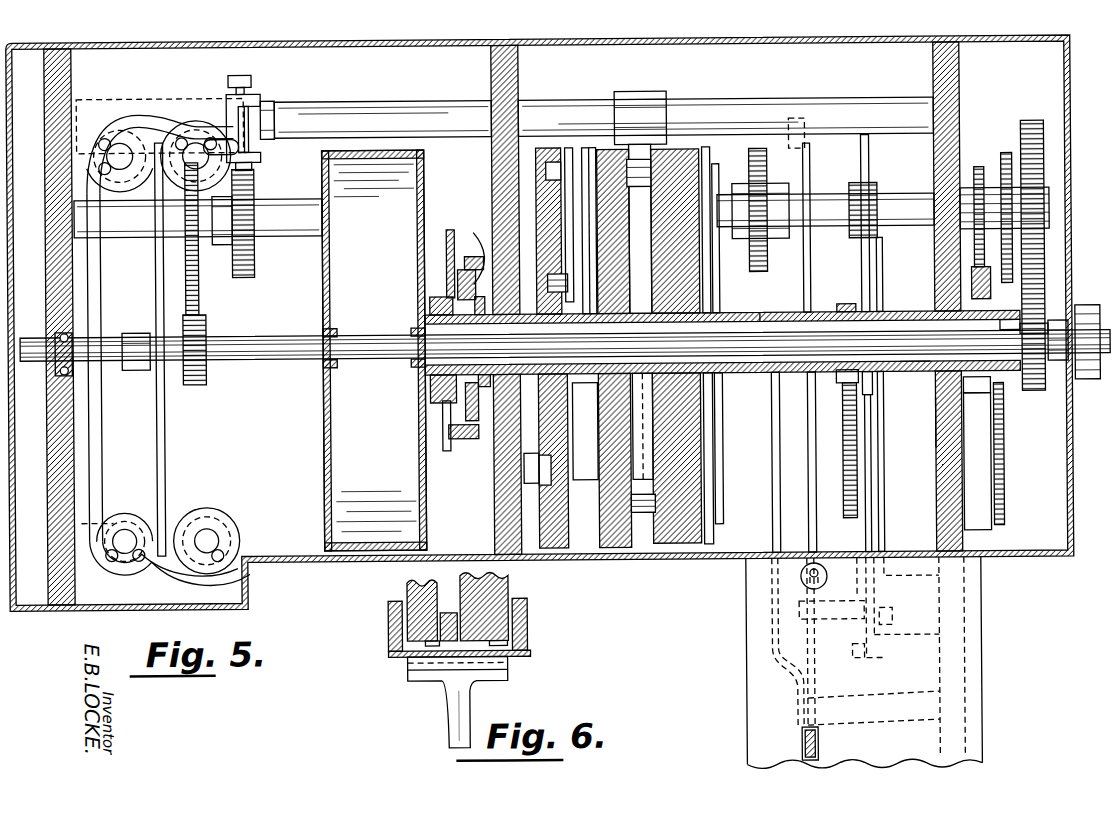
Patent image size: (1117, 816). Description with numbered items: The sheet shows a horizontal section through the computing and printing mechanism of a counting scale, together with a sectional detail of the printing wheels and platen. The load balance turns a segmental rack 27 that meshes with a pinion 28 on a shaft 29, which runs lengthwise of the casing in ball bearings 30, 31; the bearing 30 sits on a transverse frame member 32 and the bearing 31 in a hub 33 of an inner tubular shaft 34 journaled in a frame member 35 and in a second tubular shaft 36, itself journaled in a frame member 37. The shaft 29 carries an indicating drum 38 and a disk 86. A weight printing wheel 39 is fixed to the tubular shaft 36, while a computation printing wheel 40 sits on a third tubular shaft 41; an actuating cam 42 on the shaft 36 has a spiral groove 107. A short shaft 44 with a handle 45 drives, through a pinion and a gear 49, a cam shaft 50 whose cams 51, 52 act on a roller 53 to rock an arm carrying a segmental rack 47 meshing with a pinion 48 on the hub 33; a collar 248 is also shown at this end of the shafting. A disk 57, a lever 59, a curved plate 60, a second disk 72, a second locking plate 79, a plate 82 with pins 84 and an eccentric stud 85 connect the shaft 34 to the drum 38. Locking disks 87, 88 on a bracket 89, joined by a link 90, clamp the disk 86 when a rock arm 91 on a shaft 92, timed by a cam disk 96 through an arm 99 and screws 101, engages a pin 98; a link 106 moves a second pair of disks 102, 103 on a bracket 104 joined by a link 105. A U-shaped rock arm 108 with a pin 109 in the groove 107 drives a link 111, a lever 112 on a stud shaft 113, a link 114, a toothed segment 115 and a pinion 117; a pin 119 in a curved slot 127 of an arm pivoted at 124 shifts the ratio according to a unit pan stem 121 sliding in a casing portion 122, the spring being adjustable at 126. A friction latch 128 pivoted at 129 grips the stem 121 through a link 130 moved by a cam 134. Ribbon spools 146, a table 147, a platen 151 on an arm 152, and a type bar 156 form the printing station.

In FIG. 5, the segmental rack 27 is at (200, 301).
In FIG. 5, the pinion 28 is at (208, 331).
In FIG. 5, the shaft 29 is at (273, 358).
In FIG. 5, the bearing 30 is at (55, 341).
In FIG. 5, the bearing 31 is at (1004, 380).
In FIG. 5, the transverse frame member 32 is at (50, 438).
In FIG. 5, the sleeve or hub 33 is at (978, 381).
In FIG. 5, the tubular shaft 34 is at (908, 374).
In FIG. 5, the frame member 35 is at (937, 426).
In FIG. 5, the second tubular shaft 36 is at (507, 380).
In FIG. 5, the frame member 37 is at (496, 487).
In FIG. 5, the indicating drum 38 is at (322, 444).
In FIG. 5, the weight printing wheel 39 is at (614, 348).
In FIG. 6, the weight printing wheel 39 is at (410, 593).
In FIG. 5, the computation printing wheel 40 is at (676, 346).
In FIG. 6, the computation printing wheel 40 is at (505, 591).
In FIG. 5, the third tubular shaft 41 is at (753, 318).
In FIG. 5, the actuating device 42 is at (548, 231).
In FIG. 5, the short shaft 44 is at (1058, 366).
In FIG. 5, the operating handle 45 is at (1092, 383).
In FIG. 5, the segmental toothed rack 47 is at (1004, 496).
In FIG. 5, the pinion 48 is at (993, 404).
In FIG. 5, the gear 49 is at (1032, 124).
In FIG. 5, the cam shaft 50 is at (278, 232).
In FIG. 5, the cam 51 is at (980, 170).
In FIG. 5, the cam 52 is at (1008, 156).
In FIG. 5, the roller 53 is at (972, 284).
In FIG. 5, the disk 57 is at (432, 381).
In FIG. 5, the lever 59 is at (442, 416).
In FIG. 5, the curved plate 60 is at (462, 420).
In FIG. 5, the second disk 72 is at (430, 310).
In FIG. 5, the second locking plate 79 is at (447, 239).
In FIG. 5, the plate 82 is at (485, 236).
In FIG. 5, the pins 84 is at (458, 276).
In FIG. 5, the eccentric stud 85 is at (465, 261).
In FIG. 5, the disk 86 is at (165, 441).
In FIG. 5, the locking disk 87 is at (198, 112).
In FIG. 5, the locking disk 88 is at (102, 100).
In FIG. 5, the bracket 89 is at (118, 97).
In FIG. 5, the link 90 is at (152, 114).
In FIG. 5, the rock arm 91 is at (278, 106).
In FIG. 5, the shaft 92 is at (361, 106).
In FIG. 5, the cam disk 96 is at (253, 276).
In FIG. 5, the pin 98 is at (211, 130).
In FIG. 5, the arm 99 is at (254, 163).
In FIG. 5, the screws 101 is at (254, 79).
In FIG. 5, the eccentric disk 102 is at (232, 546).
In FIG. 5, the eccentric disk 103 is at (123, 518).
In FIG. 5, the bracket 104 is at (114, 560).
In FIG. 5, the link 105 is at (157, 566).
In FIG. 5, the link 106 is at (101, 431).
In FIG. 5, the spiral groove 107 is at (545, 148).
In FIG. 5, the rock arm 108 is at (570, 148).
In FIG. 5, the pin 109 is at (546, 267).
In FIG. 5, the link 111 is at (880, 293).
In FIG. 5, the lever 112 is at (876, 659).
In FIG. 5, the stud shaft 113 is at (898, 607).
In FIG. 5, the link 114 is at (870, 498).
In FIG. 5, the toothed segment 115 is at (842, 454).
In FIG. 5, the pinion 117 is at (846, 306).
In FIG. 5, the pin 119 is at (831, 626).
In FIG. 5, the stem 121 is at (816, 748).
In FIG. 5, the forwardly extending portion of casing 122 is at (864, 663).
In FIG. 5, the pivot 124 is at (797, 120).
In FIG. 5, the adjustable connection 126 is at (799, 581).
In FIG. 5, the curved slot 127 is at (808, 486).
In FIG. 5, the friction latch 128 is at (792, 711).
In FIG. 5, the pivot 129 is at (886, 657).
In FIG. 5, the link 130 is at (771, 461).
In FIG. 5, the cam 134 is at (752, 266).
In FIG. 5, the spools 146 is at (707, 148).
In FIG. 6, the table 147 is at (520, 658).
In FIG. 6, the platen 151 is at (437, 659).
In FIG. 5, the platen arm 152 is at (641, 94).
In FIG. 6, the platen arm 152 is at (460, 708).
In FIG. 5, the type bar 156 is at (642, 418).
In FIG. 6, the type bar 156 is at (465, 624).
In FIG. 5, the collar 248 is at (1043, 395).